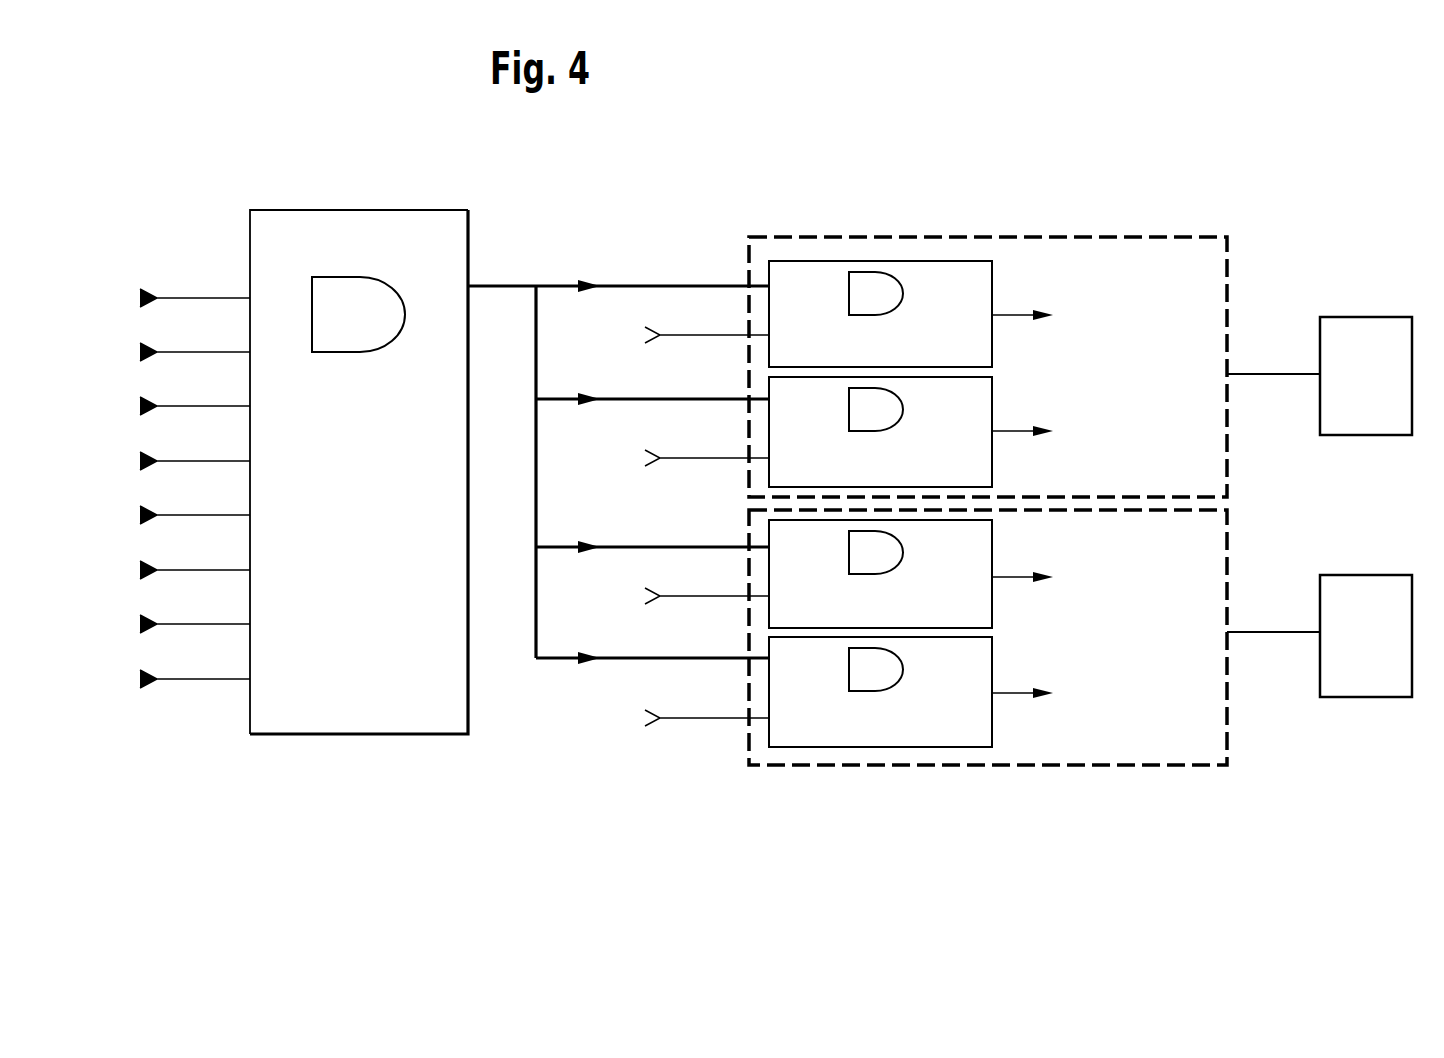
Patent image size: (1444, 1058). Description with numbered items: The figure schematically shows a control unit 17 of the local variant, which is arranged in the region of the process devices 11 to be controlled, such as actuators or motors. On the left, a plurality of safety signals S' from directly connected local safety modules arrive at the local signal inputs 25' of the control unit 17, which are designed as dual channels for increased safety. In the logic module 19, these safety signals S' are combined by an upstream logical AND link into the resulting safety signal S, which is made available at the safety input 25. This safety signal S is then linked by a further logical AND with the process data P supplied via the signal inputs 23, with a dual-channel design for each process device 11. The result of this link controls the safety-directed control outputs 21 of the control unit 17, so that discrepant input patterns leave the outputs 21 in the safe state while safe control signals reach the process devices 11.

The process device 11 is at (1380, 392).
The control unit 17 is at (831, 192).
The logic module 19 is at (261, 777).
The control output 21 is at (1043, 504).
The signal input 23 is at (688, 519).
The safety input 25 is at (618, 435).
The local signal input 25' is at (172, 482).